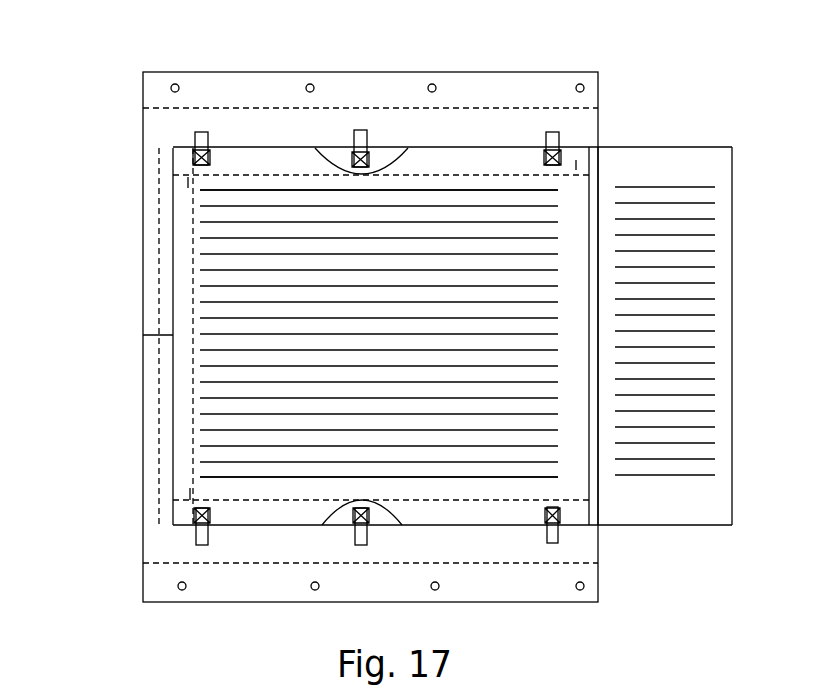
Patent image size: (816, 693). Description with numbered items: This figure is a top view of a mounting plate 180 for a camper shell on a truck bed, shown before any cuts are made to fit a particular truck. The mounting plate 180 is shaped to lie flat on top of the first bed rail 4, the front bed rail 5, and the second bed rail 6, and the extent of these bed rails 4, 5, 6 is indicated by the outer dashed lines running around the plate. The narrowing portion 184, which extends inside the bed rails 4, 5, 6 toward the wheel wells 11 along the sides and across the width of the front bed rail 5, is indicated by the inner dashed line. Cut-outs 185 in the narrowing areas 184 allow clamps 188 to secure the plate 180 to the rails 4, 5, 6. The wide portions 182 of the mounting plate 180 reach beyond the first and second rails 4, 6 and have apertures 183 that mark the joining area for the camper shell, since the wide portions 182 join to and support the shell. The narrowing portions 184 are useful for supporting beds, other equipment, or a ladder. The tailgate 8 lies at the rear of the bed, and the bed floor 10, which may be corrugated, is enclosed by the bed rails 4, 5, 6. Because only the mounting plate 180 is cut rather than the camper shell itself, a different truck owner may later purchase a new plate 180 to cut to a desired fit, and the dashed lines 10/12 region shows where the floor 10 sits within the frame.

The first bed rail 4 is at (598, 555).
The front bed rail 5 is at (158, 455).
The second bed rail 6 is at (588, 115).
The tailgate 8 is at (687, 525).
The bed floor 10 is at (572, 447).
The louvered panel 12 is at (439, 398).
The wheel well 11 is at (405, 515).
The mounting plate 180 is at (143, 370).
The wide portion 182 is at (219, 86).
The aperture 183 is at (171, 87).
The narrowing portion 184 is at (193, 182).
The cut-out 185 is at (543, 158).
The clamp 188 is at (552, 135).